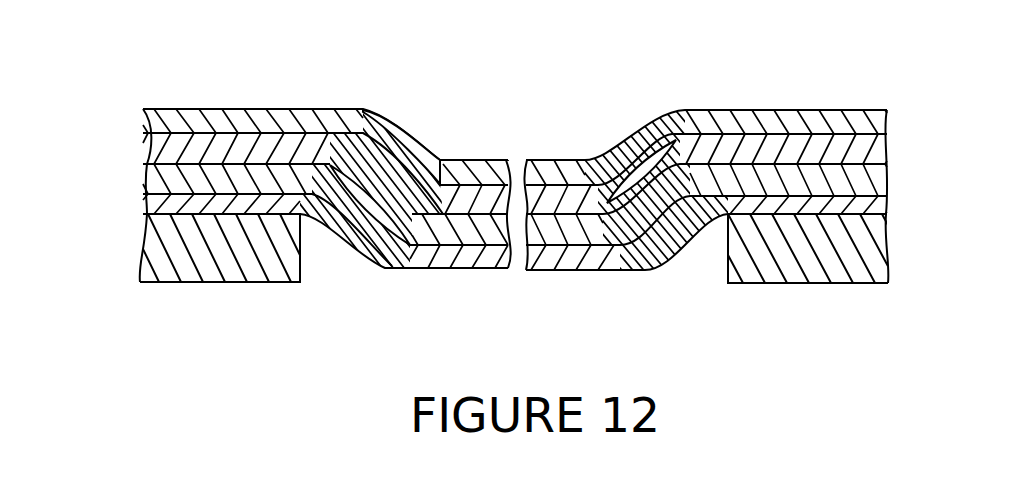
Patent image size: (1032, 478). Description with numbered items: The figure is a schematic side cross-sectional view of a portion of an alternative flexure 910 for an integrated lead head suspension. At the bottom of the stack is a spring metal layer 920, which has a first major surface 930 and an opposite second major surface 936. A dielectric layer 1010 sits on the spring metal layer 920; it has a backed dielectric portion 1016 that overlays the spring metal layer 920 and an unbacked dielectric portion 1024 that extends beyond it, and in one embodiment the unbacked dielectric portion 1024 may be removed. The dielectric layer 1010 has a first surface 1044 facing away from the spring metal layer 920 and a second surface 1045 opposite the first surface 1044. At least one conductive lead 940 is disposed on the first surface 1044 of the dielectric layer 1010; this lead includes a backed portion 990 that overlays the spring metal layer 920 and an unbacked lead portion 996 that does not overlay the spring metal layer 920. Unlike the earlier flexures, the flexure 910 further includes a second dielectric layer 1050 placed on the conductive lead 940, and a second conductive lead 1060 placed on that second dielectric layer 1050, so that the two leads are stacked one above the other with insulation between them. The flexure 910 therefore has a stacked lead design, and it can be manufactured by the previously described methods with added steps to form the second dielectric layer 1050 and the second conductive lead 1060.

The flexure 910 is at (212, 86).
The spring metal layer 920 is at (208, 288).
The first major surface 930 is at (198, 214).
The second major surface 936 is at (162, 282).
The conductive lead 940 is at (140, 172).
The backed portion 990 is at (249, 170).
The unbacked lead portion 996 is at (443, 210).
The dielectric layer 1010 is at (136, 204).
The backed dielectric portion 1016 is at (261, 214).
The unbacked dielectric portion 1024 is at (455, 268).
The first surface 1044 is at (408, 243).
The second surface 1045 is at (413, 268).
The second dielectric layer 1050 is at (558, 190).
The second conductive lead 1060 is at (655, 113).